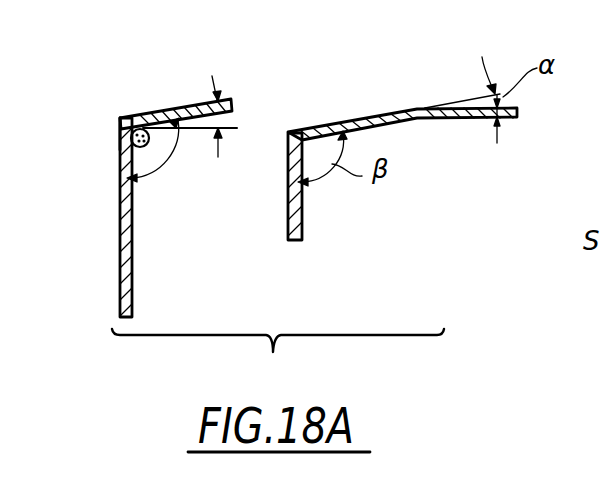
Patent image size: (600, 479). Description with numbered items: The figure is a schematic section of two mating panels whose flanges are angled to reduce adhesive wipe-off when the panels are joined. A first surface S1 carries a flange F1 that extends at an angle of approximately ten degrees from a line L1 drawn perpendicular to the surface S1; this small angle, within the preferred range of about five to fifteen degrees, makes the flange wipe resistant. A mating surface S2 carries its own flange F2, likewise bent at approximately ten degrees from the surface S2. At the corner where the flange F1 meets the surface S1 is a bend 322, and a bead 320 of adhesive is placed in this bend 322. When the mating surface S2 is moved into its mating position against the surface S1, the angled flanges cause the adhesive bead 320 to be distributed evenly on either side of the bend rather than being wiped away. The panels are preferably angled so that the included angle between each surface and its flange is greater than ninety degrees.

The bead of adhesive 320 is at (122, 138).
The bend 322 is at (133, 130).
The flange F1 is at (194, 112).
The surface S1 is at (118, 233).
The line perpendicular to the surface L1 is at (200, 130).
The flange F2 is at (302, 222).
The mating surface S2 is at (367, 113).